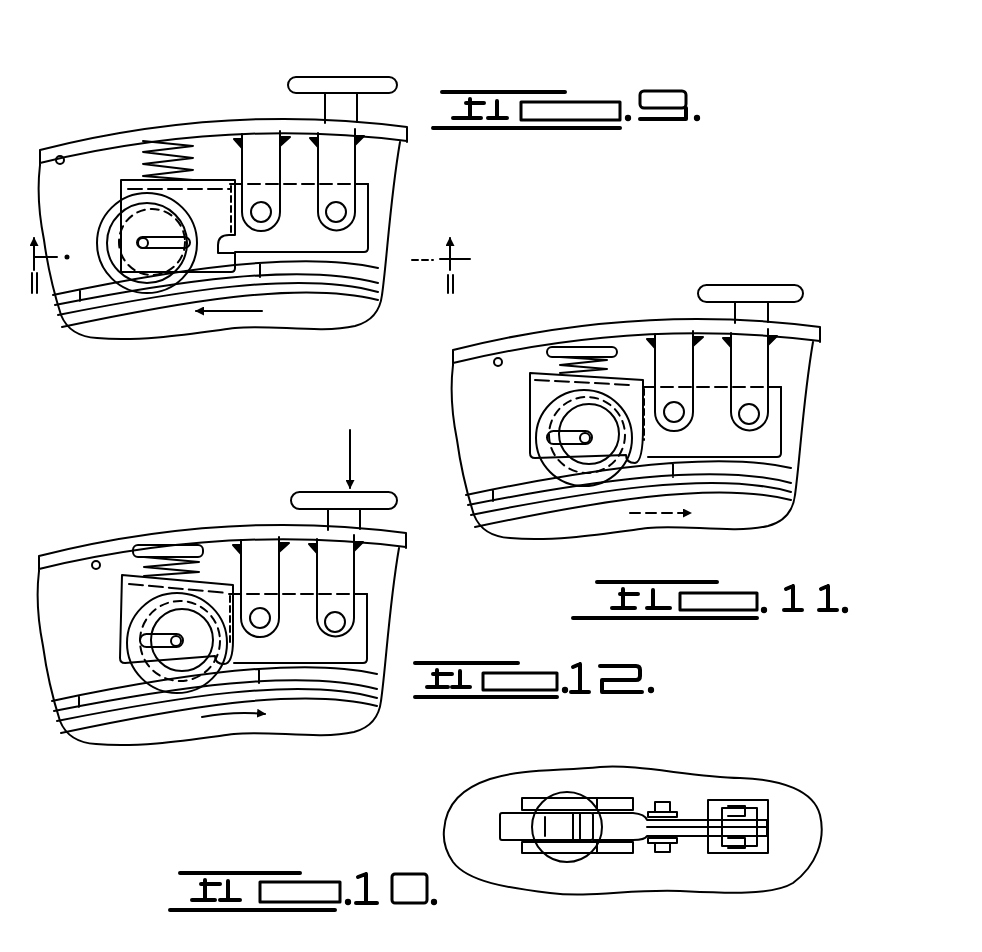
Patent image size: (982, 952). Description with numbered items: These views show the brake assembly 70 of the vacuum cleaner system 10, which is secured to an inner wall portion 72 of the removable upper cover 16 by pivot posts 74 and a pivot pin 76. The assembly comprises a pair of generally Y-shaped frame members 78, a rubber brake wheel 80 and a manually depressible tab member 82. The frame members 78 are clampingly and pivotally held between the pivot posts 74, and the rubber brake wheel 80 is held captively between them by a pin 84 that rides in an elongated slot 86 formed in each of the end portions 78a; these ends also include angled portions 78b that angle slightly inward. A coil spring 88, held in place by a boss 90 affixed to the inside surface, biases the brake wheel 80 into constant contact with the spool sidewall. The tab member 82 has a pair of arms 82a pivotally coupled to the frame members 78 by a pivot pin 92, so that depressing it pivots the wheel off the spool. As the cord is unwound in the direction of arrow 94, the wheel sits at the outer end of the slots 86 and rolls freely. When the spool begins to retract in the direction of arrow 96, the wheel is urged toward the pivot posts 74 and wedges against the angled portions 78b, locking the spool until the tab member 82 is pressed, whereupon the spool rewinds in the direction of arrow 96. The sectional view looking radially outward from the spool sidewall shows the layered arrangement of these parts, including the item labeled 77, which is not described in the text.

In FIG. 9, the vacuum cleaner system 10 is at (260, 210).
In FIG. 9, the removable upper cover 16 is at (223, 213).
In FIG. 11, the removable upper cover 16 is at (636, 406).
In FIG. 12, the removable upper cover 16 is at (222, 625).
In FIG. 10, the removable upper cover 16 is at (641, 827).
In FIG. 9, the brake assembly 70 is at (409, 199).
In FIG. 11, the brake assembly 70 is at (815, 410).
In FIG. 12, the brake assembly 70 is at (78, 603).
In FIG. 10, the brake assembly 70 is at (726, 754).
In FIG. 9, the inner wall portion 72 is at (48, 138).
In FIG. 11, the inner wall portion 72 is at (503, 335).
In FIG. 12, the inner wall portion 72 is at (108, 528).
In FIG. 9, the pivot posts 74 is at (296, 145).
In FIG. 11, the pivot posts 74 is at (712, 346).
In FIG. 12, the pivot posts 74 is at (298, 552).
In FIG. 10, the pivot posts 74 is at (670, 811).
In FIG. 9, the pivot pin 76 is at (298, 223).
In FIG. 11, the pivot pin 76 is at (711, 413).
In FIG. 12, the pivot pin 76 is at (297, 620).
In FIG. 10, the pivot pin 76 is at (667, 817).
In FIG. 10, the rail web 77 is at (458, 787).
In FIG. 9, the frame members 78 is at (299, 267).
In FIG. 11, the frame members 78 is at (742, 422).
In FIG. 12, the frame members 78 is at (339, 628).
In FIG. 10, the frame members 78 is at (680, 849).
In FIG. 10, the end portions 78a is at (522, 825).
In FIG. 10, the angled portions 78b is at (601, 830).
In FIG. 9, the rubber brake wheel 80 is at (134, 233).
In FIG. 11, the rubber brake wheel 80 is at (584, 479).
In FIG. 12, the rubber brake wheel 80 is at (147, 643).
In FIG. 10, the rubber brake wheel 80 is at (503, 821).
In FIG. 9, the manually depressible tab member 82 is at (342, 60).
In FIG. 11, the manually depressible tab member 82 is at (750, 282).
In FIG. 12, the manually depressible tab member 82 is at (351, 480).
In FIG. 9, the arms 82a is at (372, 87).
In FIG. 10, the arms 82a is at (769, 813).
In FIG. 9, the pin 84 is at (125, 301).
In FIG. 9, the elongated slot 86 is at (163, 301).
In FIG. 11, the elongated slot 86 is at (535, 433).
In FIG. 12, the elongated slot 86 is at (123, 640).
In FIG. 9, the coil spring 88 is at (178, 182).
In FIG. 11, the coil spring 88 is at (586, 375).
In FIG. 12, the coil spring 88 is at (180, 577).
In FIG. 9, the boss 90 is at (164, 127).
In FIG. 11, the boss 90 is at (582, 319).
In FIG. 12, the boss 90 is at (168, 560).
In FIG. 10, the boss 90 is at (555, 856).
In FIG. 9, the pivot pin 92 is at (367, 178).
In FIG. 10, the pivot pin 92 is at (759, 887).
In FIG. 9, the arrow 94 is at (230, 336).
In FIG. 11, the directional arrow 96 is at (649, 540).
In FIG. 12, the directional arrow 96 is at (233, 743).